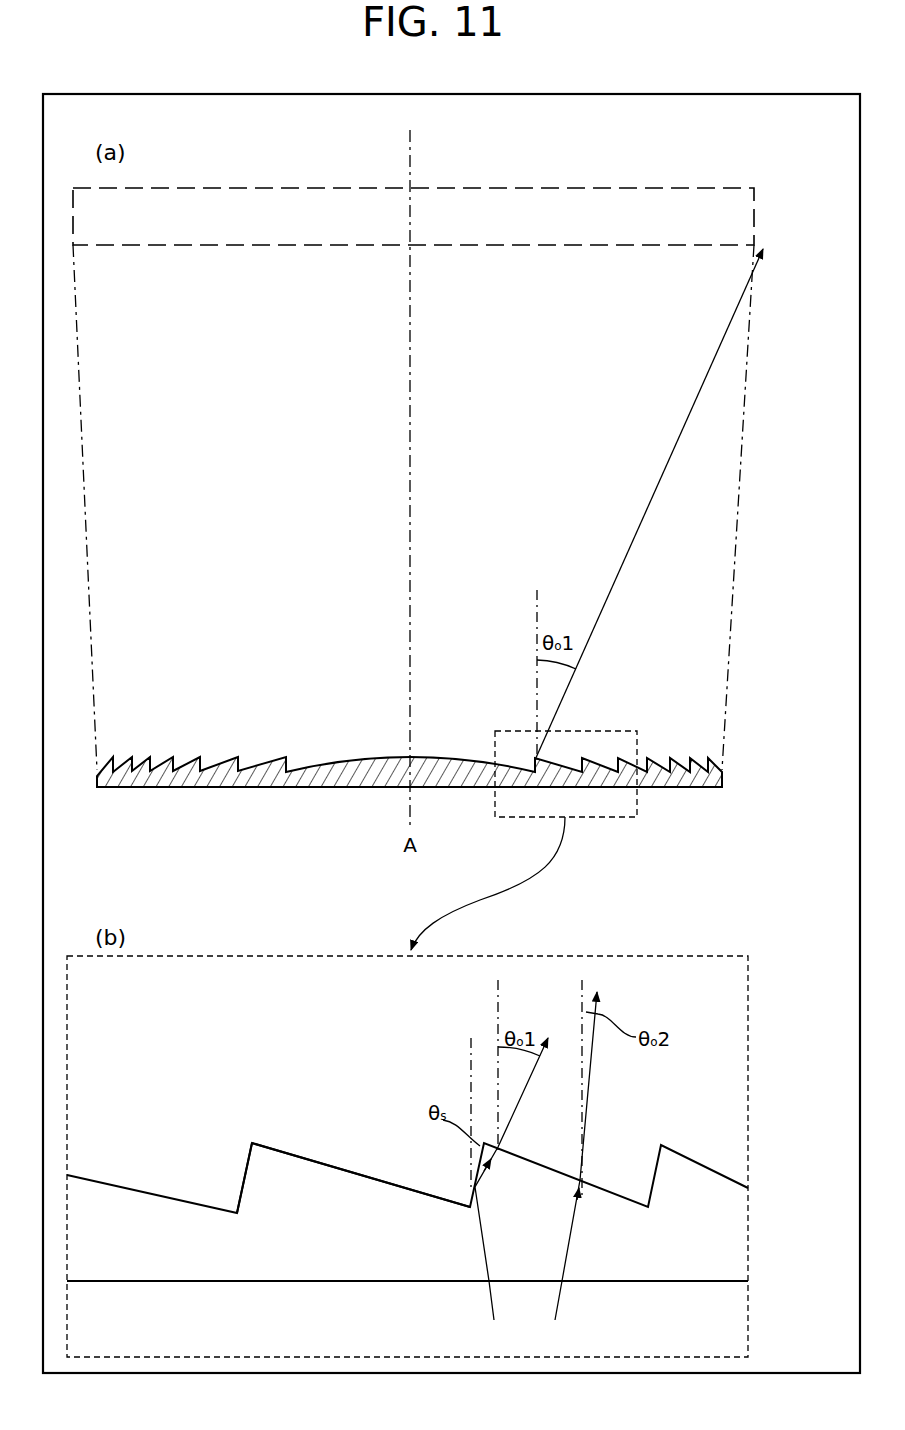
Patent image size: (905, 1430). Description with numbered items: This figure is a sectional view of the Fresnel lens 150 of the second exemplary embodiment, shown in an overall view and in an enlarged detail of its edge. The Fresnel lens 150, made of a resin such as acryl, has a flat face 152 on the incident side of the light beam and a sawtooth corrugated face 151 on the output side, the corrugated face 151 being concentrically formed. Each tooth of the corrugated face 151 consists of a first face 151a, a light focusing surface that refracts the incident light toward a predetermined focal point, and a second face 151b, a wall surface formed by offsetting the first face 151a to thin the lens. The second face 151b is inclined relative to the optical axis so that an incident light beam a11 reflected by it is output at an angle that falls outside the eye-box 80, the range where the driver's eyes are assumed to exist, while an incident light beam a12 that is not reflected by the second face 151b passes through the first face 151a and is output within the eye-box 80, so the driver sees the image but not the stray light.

The eye-box 80 is at (683, 192).
The Fresnel lens 150 is at (722, 779).
The corrugated face 151 is at (407, 1114).
The first face 151a is at (361, 1131).
The second face 151b is at (243, 1163).
The flat face 152 is at (397, 1285).
The incident light beam a11 is at (510, 1194).
The incident light beam a12 is at (570, 1171).